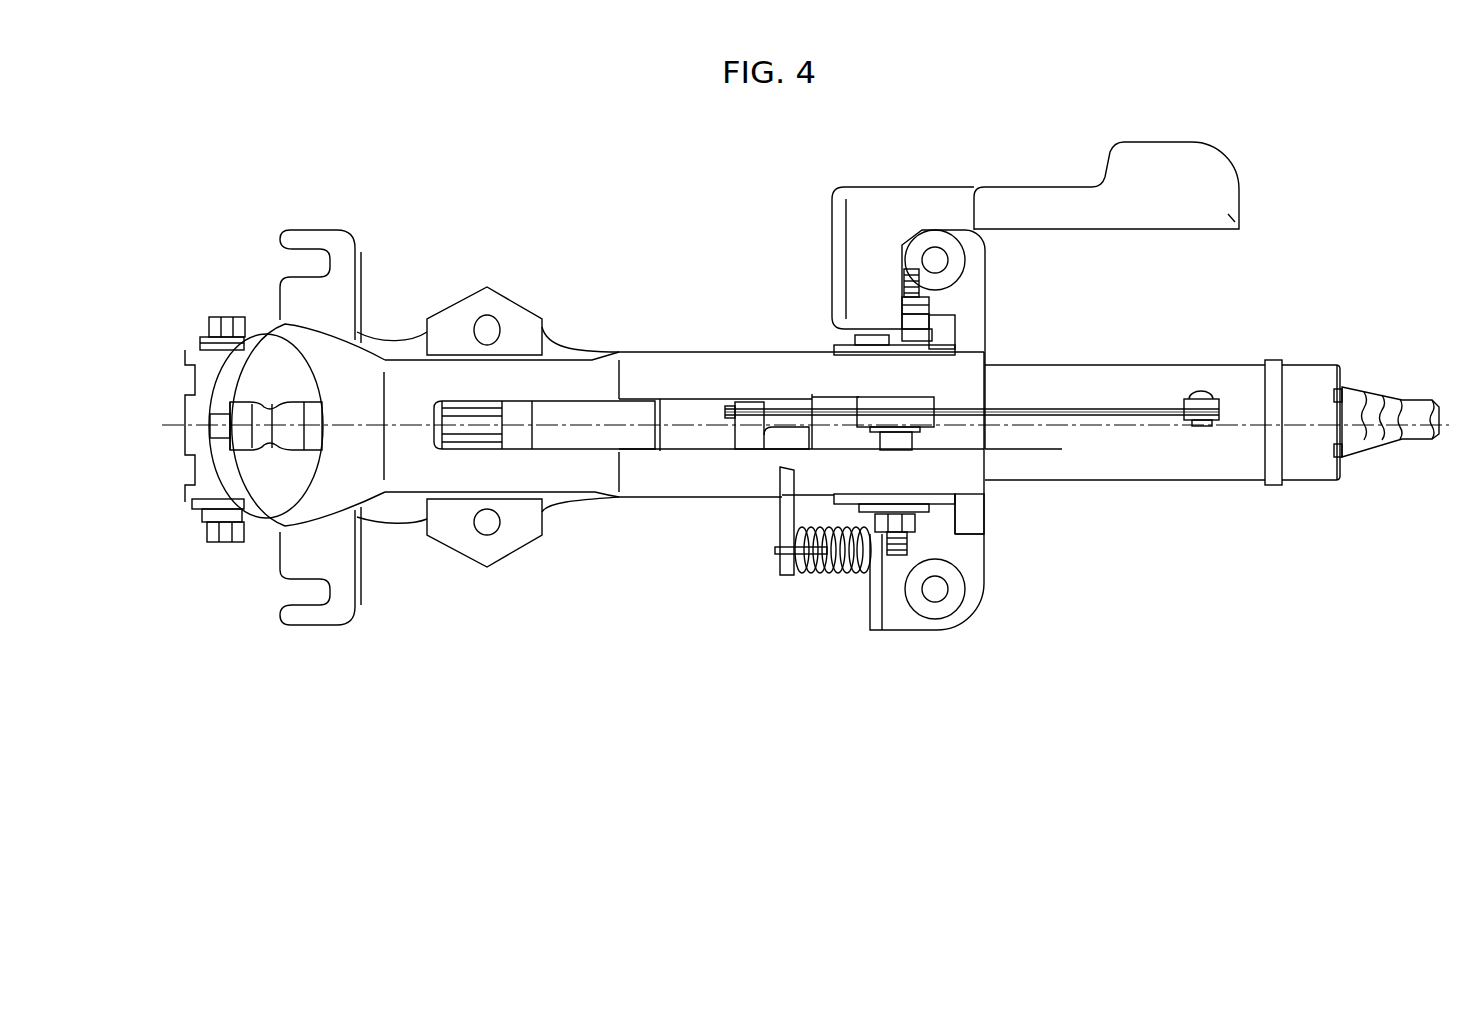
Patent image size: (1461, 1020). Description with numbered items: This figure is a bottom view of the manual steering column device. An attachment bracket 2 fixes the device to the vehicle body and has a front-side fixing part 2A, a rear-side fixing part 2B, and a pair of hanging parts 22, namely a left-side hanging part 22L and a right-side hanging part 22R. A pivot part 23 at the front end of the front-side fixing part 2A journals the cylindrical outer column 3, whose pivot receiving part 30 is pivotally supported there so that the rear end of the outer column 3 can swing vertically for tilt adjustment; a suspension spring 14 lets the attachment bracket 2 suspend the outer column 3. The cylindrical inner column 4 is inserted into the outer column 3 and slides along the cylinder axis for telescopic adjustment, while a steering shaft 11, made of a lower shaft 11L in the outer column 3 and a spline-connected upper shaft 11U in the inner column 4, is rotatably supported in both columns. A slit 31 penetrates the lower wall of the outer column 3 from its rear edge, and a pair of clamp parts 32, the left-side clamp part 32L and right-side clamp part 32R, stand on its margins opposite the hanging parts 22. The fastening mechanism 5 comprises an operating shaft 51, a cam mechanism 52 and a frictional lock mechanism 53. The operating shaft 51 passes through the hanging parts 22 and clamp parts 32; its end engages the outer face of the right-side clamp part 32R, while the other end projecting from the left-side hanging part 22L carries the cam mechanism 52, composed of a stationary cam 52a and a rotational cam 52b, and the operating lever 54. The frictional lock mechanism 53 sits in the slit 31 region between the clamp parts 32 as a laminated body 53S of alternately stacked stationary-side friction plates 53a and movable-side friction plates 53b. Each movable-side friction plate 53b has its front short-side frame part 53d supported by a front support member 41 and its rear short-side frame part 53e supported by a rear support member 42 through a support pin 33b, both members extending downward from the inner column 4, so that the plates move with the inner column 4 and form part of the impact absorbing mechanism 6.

The attachment bracket 2 is at (621, 459).
The front-side fixing part 2A is at (288, 613).
The rear-side fixing part 2B is at (937, 608).
The outer column 3 is at (628, 348).
The inner column 4 is at (1298, 361).
The fastening mechanism 5 is at (805, 328).
The impact absorbing mechanism 6 is at (1098, 396).
The steering shaft 11 is at (787, 369).
The lower shaft 11L is at (230, 408).
The upper shaft 11U is at (1352, 385).
The suspension spring 14 is at (818, 573).
The hanging parts 22 is at (817, 451).
The left-side hanging part 22L is at (835, 348).
The right-side hanging part 22R is at (850, 500).
The pivot part 23 is at (190, 500).
The pivot receiving part 30 is at (193, 472).
The slit 31 is at (970, 478).
The clamp parts 32 is at (1019, 444).
The left-side clamp part 32L is at (958, 352).
The right-side clamp part 32R is at (975, 488).
The support pin 33b is at (1193, 430).
The front support member 41 is at (742, 437).
The rear support member 42 is at (1208, 420).
The operating shaft 51 is at (887, 553).
The cam mechanism 52 is at (908, 389).
The stationary cam 52a is at (925, 335).
The rotational cam 52b is at (920, 310).
The frictional lock mechanism 53 is at (959, 403).
The stationary-side friction plate 53a is at (900, 397).
The movable-side friction plate 53b is at (1068, 417).
The front short-side frame part 53d is at (723, 405).
The rear short-side frame part 53e is at (1223, 400).
The laminated body 53S is at (870, 392).
The operating lever 54 is at (1168, 158).